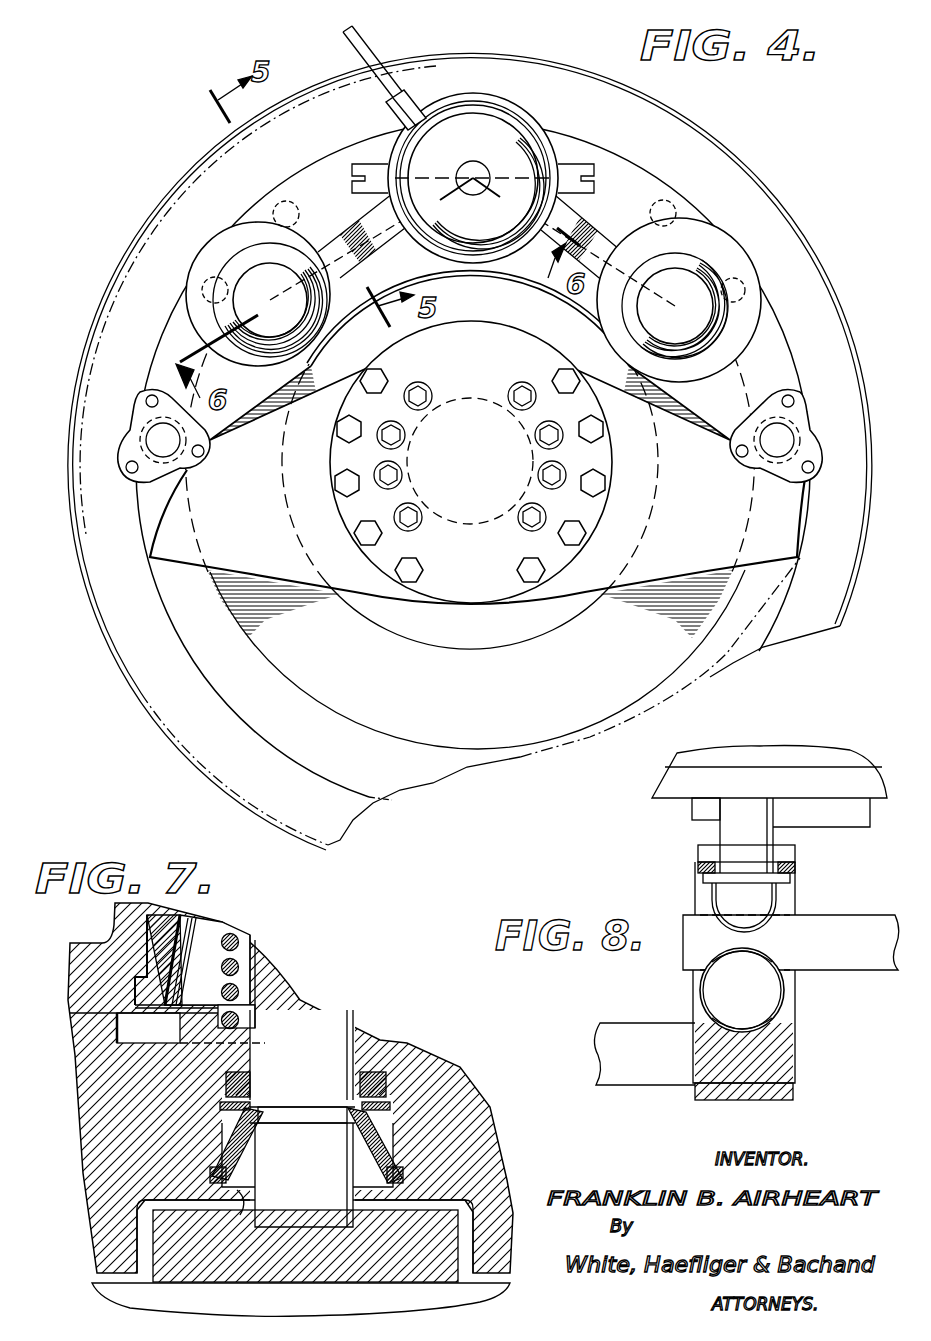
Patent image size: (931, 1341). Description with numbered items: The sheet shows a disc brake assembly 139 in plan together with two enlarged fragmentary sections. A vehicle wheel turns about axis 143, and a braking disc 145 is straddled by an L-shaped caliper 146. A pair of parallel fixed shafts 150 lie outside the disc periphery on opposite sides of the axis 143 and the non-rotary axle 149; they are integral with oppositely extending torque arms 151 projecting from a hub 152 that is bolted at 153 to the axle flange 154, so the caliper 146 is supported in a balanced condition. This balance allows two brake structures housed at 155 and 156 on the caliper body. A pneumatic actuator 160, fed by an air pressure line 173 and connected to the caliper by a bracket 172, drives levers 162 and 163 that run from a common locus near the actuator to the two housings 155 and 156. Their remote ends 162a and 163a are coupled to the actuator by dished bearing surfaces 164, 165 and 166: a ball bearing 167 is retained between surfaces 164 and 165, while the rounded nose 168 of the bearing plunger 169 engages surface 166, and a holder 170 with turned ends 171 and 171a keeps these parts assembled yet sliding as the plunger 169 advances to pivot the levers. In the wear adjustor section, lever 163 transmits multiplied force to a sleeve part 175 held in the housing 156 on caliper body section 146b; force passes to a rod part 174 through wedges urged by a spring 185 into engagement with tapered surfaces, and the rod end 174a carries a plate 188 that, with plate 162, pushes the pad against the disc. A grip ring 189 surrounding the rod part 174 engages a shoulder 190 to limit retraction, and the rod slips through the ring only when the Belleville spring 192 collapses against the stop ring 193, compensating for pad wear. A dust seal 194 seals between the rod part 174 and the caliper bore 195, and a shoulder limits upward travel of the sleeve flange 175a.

In FIG. 4, the brake assembly 139 is at (665, 181).
In FIG. 4, the axis 143 is at (468, 476).
In FIG. 4, the braking disc 145 is at (477, 659).
In FIG. 4, the caliper 146 is at (774, 362).
In FIG. 4, the caliper body section 146b is at (770, 330).
In FIG. 7, the caliper body section 146b is at (470, 1180).
In FIG. 4, the non-rotary axle 149 is at (480, 392).
In FIG. 4, the shafts 150 is at (160, 437).
In FIG. 4, the torque arms 151 is at (470, 440).
In FIG. 4, the hub 152 is at (458, 336).
In FIG. 4, the bolts 153 is at (409, 588).
In FIG. 4, the axle flange 154 is at (490, 650).
In FIG. 4, the brake structure housing 155 is at (729, 241).
In FIG. 4, the brake structure housing 156 is at (228, 243).
In FIG. 4, the actuator 160 is at (538, 97).
In FIG. 8, the actuator 160 is at (843, 754).
In FIG. 4, the lever 162 is at (583, 233).
In FIG. 7, the lever 162 is at (301, 1299).
In FIG. 8, the lever end 162a is at (791, 942).
In FIG. 4, the lever 163 is at (365, 232).
In FIG. 8, the lever end 163a is at (643, 1054).
In FIG. 8, the dished bearing surface 164 is at (770, 1013).
In FIG. 8, the dished bearing surface 165 is at (730, 970).
In FIG. 8, the dished bearing surface 166 is at (775, 915).
In FIG. 8, the ball bearing 167 is at (742, 990).
In FIG. 8, the rounded nose 168 is at (735, 905).
In FIG. 8, the bearing plunger 169 is at (745, 835).
In FIG. 8, the holder 170 is at (796, 1064).
In FIG. 8, the turned end 171 is at (717, 1095).
In FIG. 8, the turned end 171a is at (700, 865).
In FIG. 8, the bracket 172 is at (850, 818).
In FIG. 4, the air pressure line 173 is at (372, 57).
In FIG. 7, the rod part 174 is at (302, 1066).
In FIG. 7, the rod part end 174a is at (304, 1175).
In FIG. 7, the sleeve part 175 is at (185, 916).
In FIG. 7, the sleeve flange 175a is at (150, 995).
In FIG. 7, the spring 185 is at (238, 992).
In FIG. 7, the plate 188 is at (440, 1245).
In FIG. 7, the grip ring 189 is at (386, 1080).
In FIG. 7, the shoulder 190 is at (226, 1082).
In FIG. 7, the Belleville spring 192 is at (390, 1104).
In FIG. 7, the stop ring 193 is at (395, 1112).
In FIG. 7, the dust seal 194 is at (228, 1145).
In FIG. 7, the caliper bore 195 is at (238, 1192).